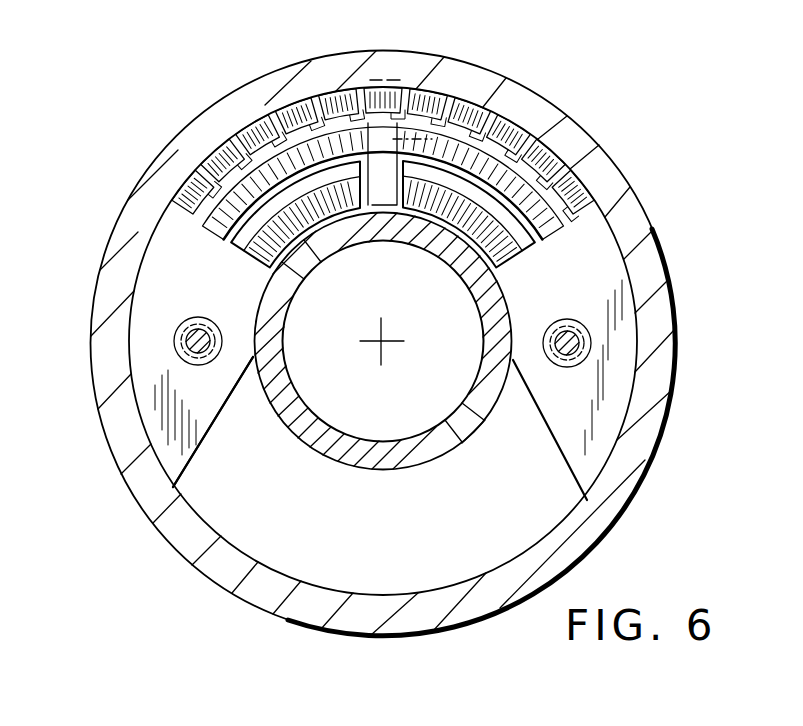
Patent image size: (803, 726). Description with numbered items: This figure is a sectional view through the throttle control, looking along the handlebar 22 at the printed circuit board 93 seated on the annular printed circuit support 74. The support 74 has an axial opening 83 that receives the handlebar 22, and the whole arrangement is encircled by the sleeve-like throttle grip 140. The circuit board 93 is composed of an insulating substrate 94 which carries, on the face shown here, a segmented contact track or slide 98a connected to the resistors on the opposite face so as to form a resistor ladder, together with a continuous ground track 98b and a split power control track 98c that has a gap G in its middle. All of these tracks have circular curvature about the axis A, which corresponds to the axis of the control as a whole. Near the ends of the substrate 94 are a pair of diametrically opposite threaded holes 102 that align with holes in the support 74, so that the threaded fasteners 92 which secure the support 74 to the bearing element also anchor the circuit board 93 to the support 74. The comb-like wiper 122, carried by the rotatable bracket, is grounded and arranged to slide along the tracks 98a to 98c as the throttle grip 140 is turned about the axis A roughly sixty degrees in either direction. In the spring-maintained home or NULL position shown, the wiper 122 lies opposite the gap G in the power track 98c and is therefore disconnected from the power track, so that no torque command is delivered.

The handlebar 22 is at (347, 440).
The printed circuit support 74 is at (337, 537).
The axial opening 83 is at (413, 460).
The threaded fasteners 92 is at (203, 328).
The printed circuit board 93 is at (207, 449).
The insulating substrate 94 is at (143, 350).
The segmented contact track 98a is at (243, 130).
The continuous ground track 98b is at (175, 196).
The split power control track 98c is at (238, 247).
The threaded holes 102 is at (567, 360).
The comb-like wiper 122 is at (448, 122).
The throttle grip 140 is at (634, 224).
The gap G is at (383, 172).
The axis A is at (386, 342).